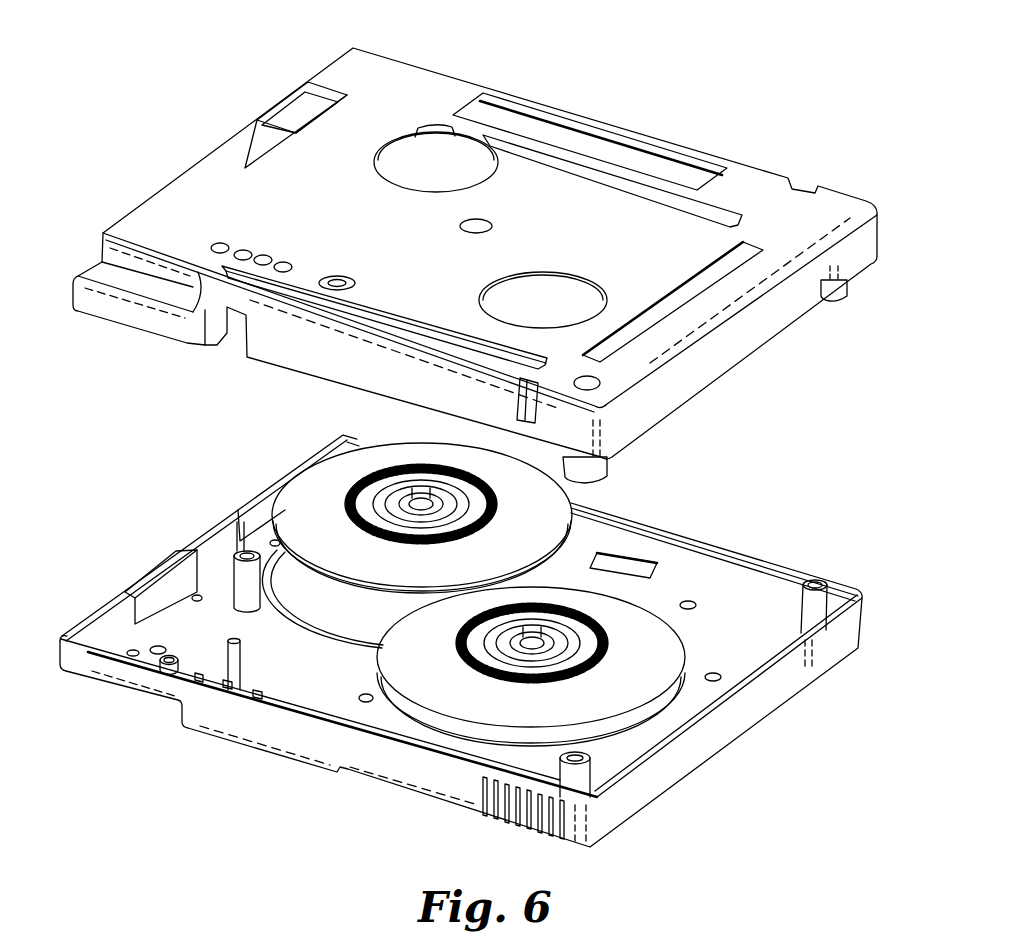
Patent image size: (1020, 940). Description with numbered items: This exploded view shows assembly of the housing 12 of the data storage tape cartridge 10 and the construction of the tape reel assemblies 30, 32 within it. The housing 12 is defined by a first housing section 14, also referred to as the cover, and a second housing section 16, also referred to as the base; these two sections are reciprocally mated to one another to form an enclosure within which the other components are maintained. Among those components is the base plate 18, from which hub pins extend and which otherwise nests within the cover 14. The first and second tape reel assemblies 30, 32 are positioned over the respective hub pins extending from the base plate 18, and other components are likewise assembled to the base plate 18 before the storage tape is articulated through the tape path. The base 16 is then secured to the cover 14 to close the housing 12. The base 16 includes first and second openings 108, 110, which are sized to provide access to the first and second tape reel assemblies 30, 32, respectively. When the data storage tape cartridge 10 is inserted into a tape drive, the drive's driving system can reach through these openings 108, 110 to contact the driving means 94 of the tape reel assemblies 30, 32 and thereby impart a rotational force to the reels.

The data storage tape cartridge 10 is at (562, 66).
The housing 12 is at (159, 554).
The first housing section 14 is at (831, 573).
The second housing section 16 is at (756, 163).
The base plate 18 is at (761, 611).
The first tape reel assembly 30 is at (620, 600).
The second tape reel assembly 32 is at (572, 505).
The driving means 94 is at (398, 486).
The first opening 108 is at (544, 275).
The second opening 110 is at (428, 183).